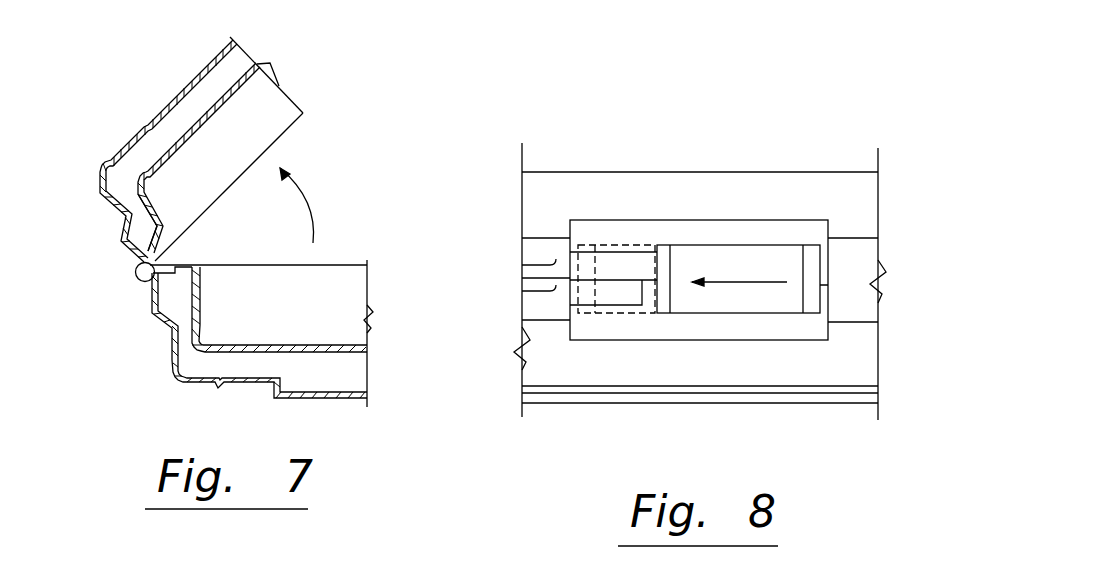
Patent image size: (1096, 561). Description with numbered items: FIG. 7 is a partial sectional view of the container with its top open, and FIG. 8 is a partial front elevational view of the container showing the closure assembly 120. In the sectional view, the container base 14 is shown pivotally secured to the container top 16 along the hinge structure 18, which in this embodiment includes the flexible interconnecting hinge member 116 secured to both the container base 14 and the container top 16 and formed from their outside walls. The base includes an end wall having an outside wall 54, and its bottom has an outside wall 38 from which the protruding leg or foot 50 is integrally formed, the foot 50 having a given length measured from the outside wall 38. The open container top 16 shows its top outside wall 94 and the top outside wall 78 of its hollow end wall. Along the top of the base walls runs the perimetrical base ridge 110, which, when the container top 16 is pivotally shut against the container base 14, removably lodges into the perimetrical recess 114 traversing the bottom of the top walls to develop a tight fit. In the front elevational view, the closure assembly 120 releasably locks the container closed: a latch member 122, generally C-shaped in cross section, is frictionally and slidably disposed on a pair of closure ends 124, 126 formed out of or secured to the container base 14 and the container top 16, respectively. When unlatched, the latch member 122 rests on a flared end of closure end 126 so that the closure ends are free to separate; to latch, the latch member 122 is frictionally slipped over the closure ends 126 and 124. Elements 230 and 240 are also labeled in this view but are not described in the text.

In FIG. 7, the container base 14 is at (375, 352).
In FIG. 7, the container top 16 is at (292, 75).
In FIG. 7, the hinge structure 18 is at (147, 283).
In FIG. 8, the outside wall 38 is at (862, 400).
In FIG. 7, the protruding leg or foot 50 is at (338, 396).
In FIG. 8, the protruding leg or foot 50 is at (833, 400).
In FIG. 8, the outside wall 54 is at (848, 362).
In FIG. 8, the top outside wall 78 is at (845, 212).
In FIG. 8, the top outside wall 94 is at (815, 173).
In FIG. 7, the perimetrical base ridge 110 is at (152, 258).
In FIG. 7, the perimetrical recess 114 is at (170, 262).
In FIG. 7, the hinge member 116 is at (136, 278).
In FIG. 8, the closure assembly 120 is at (745, 228).
In FIG. 8, the latch member 122 is at (752, 300).
In FIG. 8, the closure end 124 is at (617, 292).
In FIG. 8, the closure end 126 is at (605, 267).
In FIG. 8, the upper tab 230 is at (535, 265).
In FIG. 8, the lower tab 240 is at (535, 291).